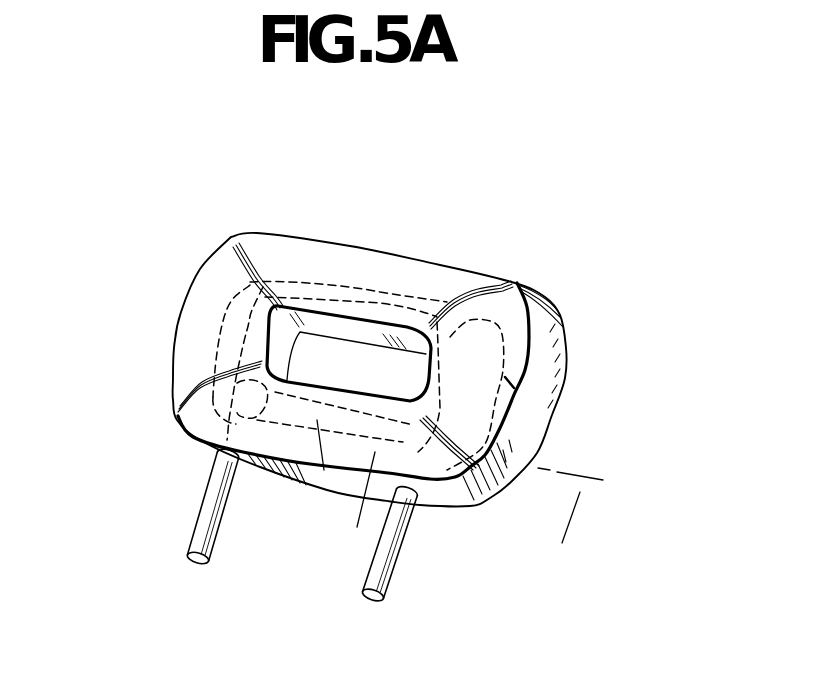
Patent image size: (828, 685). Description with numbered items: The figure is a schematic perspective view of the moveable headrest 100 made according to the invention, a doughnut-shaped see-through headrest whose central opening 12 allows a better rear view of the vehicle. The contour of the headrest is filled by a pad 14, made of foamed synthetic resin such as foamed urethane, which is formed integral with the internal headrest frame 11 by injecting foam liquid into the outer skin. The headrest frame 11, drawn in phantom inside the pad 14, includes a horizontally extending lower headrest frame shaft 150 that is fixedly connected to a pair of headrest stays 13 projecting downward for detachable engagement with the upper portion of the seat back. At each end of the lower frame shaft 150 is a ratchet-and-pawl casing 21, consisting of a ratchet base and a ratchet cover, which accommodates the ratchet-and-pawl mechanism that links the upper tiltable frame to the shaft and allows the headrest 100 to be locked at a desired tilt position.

The moveable headrest 100 is at (563, 277).
The headrest frame 11 is at (445, 300).
The central opening 12 is at (352, 333).
The headrest stays 13 is at (207, 517).
The pad 14 is at (530, 385).
The ratchet-and-pawl casing 21 is at (228, 347).
The lower headrest frame shaft 150 is at (328, 422).